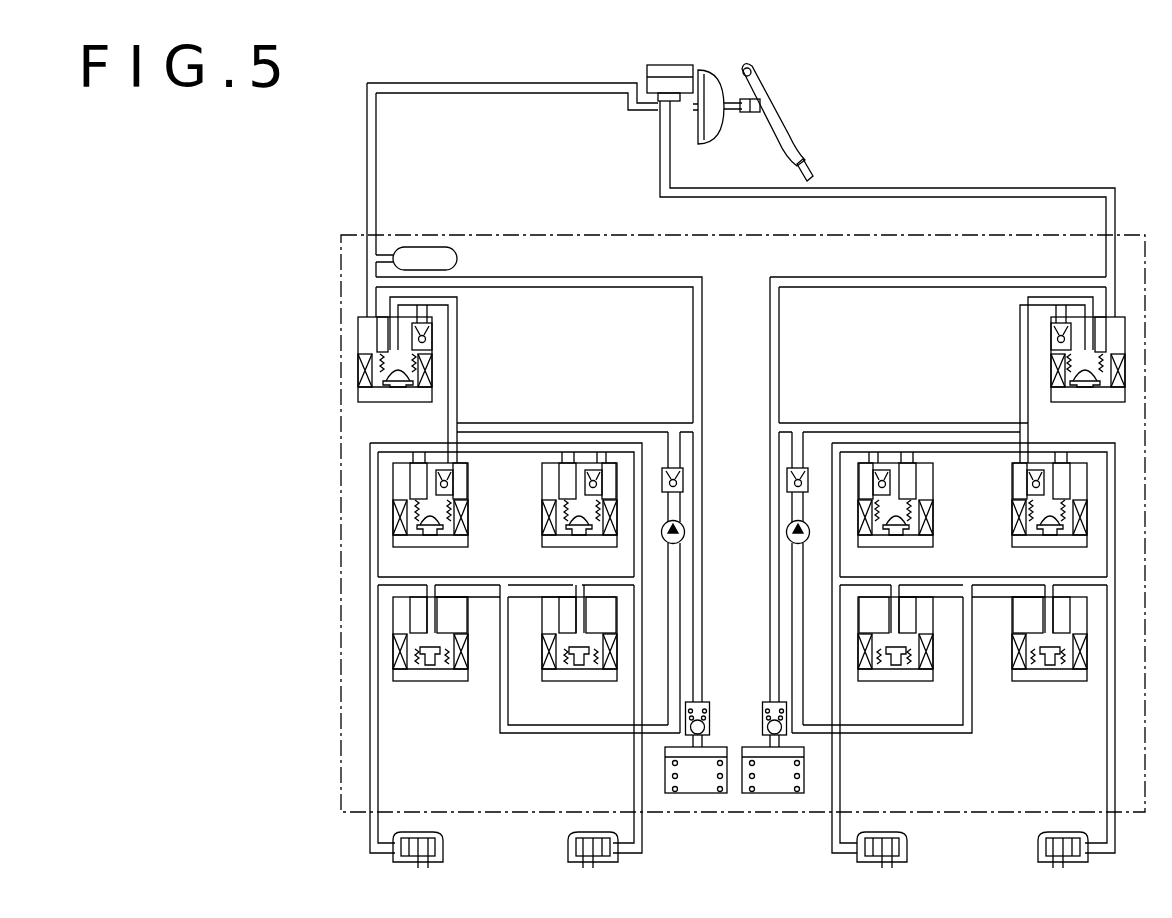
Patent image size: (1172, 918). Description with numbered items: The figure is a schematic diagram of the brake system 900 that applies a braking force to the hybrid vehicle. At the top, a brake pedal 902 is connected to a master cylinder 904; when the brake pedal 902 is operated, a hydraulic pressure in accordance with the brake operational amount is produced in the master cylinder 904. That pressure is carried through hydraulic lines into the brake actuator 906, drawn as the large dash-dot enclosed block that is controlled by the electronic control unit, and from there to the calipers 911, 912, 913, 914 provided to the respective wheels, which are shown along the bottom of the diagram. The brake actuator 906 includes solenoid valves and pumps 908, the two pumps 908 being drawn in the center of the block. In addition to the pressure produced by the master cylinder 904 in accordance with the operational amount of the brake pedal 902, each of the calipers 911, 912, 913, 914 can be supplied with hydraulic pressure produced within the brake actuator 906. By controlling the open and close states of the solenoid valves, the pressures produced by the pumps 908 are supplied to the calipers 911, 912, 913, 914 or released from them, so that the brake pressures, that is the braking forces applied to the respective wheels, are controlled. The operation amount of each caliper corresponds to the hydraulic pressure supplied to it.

The brake system 900 is at (957, 152).
The brake pedal 902 is at (781, 133).
The master cylinder 904 is at (643, 110).
The brake actuator 906 is at (341, 358).
The pumps 908 is at (683, 522).
The caliper 911 is at (1038, 848).
The caliper 912 is at (903, 840).
The caliper 913 is at (568, 848).
The caliper 914 is at (443, 840).